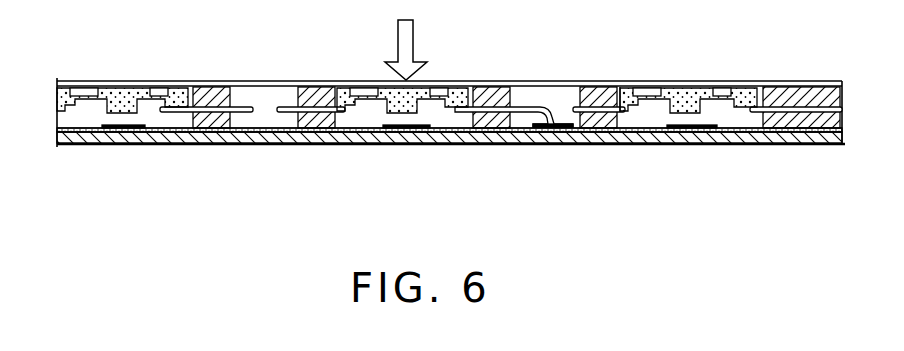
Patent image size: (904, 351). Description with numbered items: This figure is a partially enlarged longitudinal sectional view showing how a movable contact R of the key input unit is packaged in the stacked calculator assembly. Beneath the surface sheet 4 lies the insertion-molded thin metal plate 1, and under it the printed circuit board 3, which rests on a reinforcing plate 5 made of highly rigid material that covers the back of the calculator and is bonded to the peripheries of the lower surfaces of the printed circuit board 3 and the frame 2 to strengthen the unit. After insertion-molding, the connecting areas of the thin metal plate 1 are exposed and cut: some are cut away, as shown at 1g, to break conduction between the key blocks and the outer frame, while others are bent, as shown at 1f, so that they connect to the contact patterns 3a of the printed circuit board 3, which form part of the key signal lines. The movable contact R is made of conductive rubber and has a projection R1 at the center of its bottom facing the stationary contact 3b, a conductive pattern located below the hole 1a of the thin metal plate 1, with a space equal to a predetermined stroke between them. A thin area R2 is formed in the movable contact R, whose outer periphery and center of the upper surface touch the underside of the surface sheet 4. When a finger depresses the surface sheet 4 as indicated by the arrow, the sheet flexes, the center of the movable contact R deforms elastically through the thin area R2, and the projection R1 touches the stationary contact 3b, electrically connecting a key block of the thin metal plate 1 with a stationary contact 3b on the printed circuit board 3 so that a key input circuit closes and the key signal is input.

The thin metal plate 1 is at (838, 108).
The hole 1a is at (453, 138).
The bent portion 1f is at (561, 109).
The cut-away connecting area 1g is at (264, 104).
The frame 2 is at (785, 88).
The printed circuit board 3 is at (298, 113).
The contact pattern 3a is at (560, 118).
The stationary contact 3b is at (426, 128).
The surface sheet 4 is at (665, 82).
The reinforcing plate 5 is at (743, 141).
The movable contact R is at (428, 88).
The projection R1 is at (403, 127).
The thin area R2 is at (372, 88).